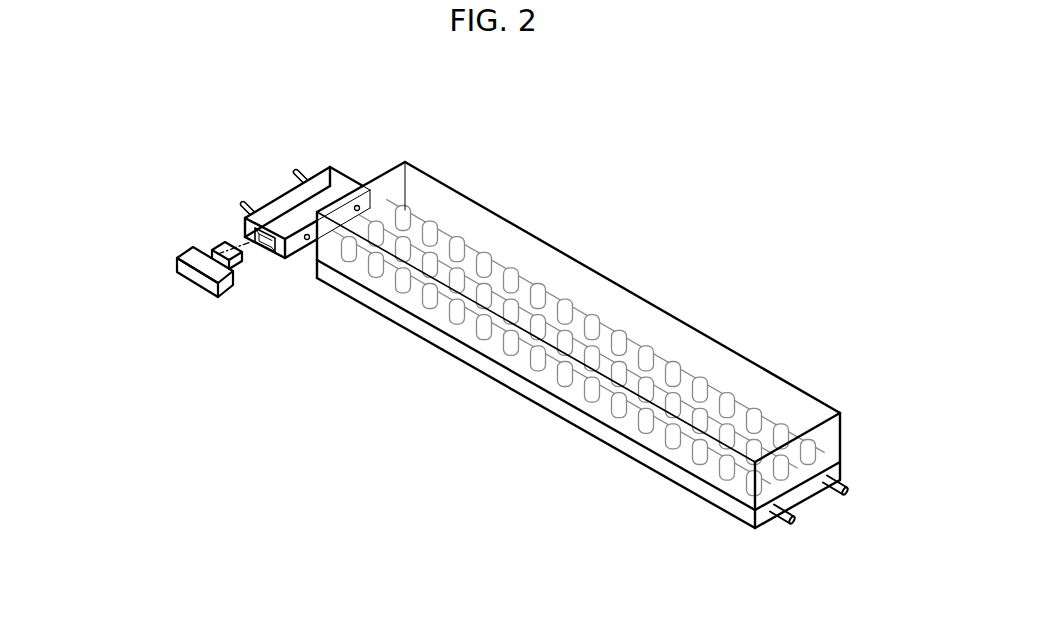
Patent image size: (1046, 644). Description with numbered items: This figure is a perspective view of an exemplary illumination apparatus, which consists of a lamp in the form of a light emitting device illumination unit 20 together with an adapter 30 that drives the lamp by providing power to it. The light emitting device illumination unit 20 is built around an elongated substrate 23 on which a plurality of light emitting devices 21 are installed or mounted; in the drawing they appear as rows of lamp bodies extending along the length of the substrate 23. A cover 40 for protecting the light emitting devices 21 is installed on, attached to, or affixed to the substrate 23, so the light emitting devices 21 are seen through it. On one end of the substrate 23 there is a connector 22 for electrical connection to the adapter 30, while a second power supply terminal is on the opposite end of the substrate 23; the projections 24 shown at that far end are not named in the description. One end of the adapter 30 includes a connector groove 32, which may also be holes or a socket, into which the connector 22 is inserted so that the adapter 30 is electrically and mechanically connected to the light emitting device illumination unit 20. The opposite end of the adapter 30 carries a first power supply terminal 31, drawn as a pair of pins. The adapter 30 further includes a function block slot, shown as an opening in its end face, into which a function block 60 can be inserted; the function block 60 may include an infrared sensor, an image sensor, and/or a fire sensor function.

The light emitting device illumination unit 20 is at (566, 445).
The light emitting devices 21 is at (676, 448).
The connector 22 is at (320, 250).
The substrate 23 is at (698, 488).
The fixing pegs 24 is at (776, 523).
The adapter 30 is at (356, 170).
The first power supply terminal 31 is at (256, 205).
The connector groove 32 is at (306, 232).
The cover 40 is at (640, 305).
The function block 60 is at (205, 297).